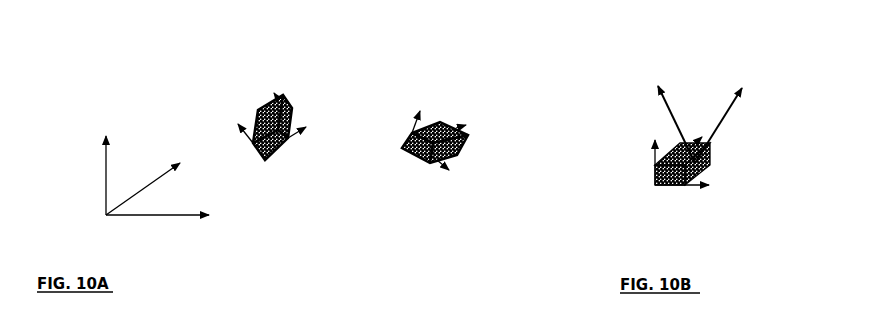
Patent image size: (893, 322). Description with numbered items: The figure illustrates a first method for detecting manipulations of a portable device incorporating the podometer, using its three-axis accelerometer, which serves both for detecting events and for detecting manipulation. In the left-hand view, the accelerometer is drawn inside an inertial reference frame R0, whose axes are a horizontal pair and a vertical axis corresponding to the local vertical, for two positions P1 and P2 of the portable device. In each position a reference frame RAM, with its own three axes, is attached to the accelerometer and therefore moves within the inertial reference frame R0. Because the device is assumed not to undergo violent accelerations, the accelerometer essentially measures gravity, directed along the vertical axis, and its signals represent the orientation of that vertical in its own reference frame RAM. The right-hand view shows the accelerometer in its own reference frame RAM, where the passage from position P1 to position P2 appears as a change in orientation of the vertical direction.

In FIG. 10A, the inertial reference frame R0 is at (118, 128).
In FIG. 10A, the first position of the portable device P1 is at (286, 93).
In FIG. 10A, the second position of the portable device P2 is at (454, 111).
In FIG. 10A, the accelerometer reference frame RAM is at (294, 176).
In FIG. 10B, the accelerometer reference frame RAM is at (638, 196).